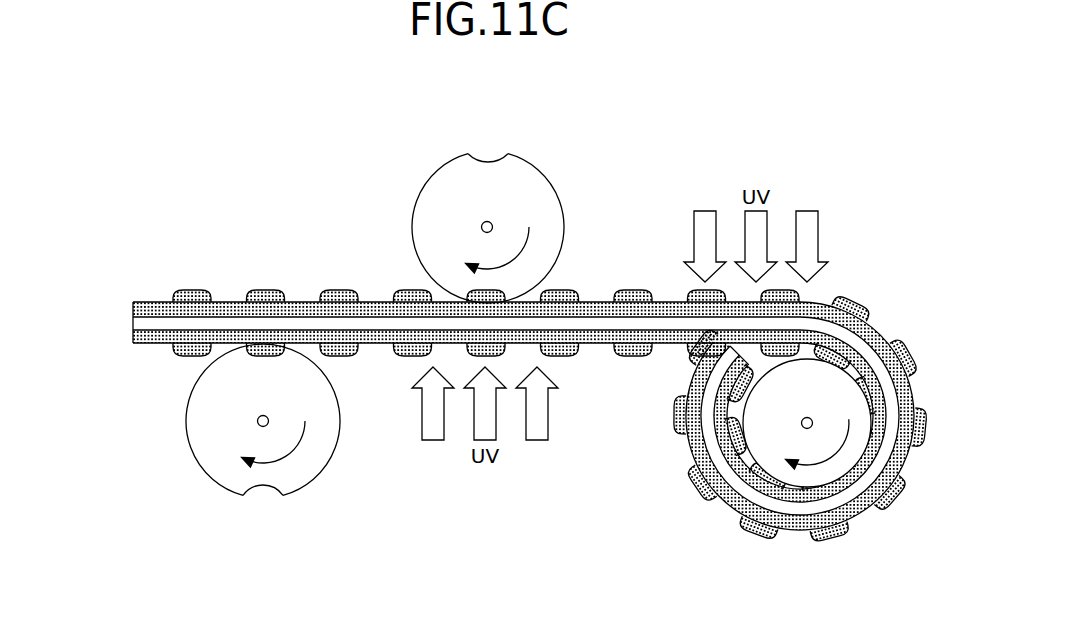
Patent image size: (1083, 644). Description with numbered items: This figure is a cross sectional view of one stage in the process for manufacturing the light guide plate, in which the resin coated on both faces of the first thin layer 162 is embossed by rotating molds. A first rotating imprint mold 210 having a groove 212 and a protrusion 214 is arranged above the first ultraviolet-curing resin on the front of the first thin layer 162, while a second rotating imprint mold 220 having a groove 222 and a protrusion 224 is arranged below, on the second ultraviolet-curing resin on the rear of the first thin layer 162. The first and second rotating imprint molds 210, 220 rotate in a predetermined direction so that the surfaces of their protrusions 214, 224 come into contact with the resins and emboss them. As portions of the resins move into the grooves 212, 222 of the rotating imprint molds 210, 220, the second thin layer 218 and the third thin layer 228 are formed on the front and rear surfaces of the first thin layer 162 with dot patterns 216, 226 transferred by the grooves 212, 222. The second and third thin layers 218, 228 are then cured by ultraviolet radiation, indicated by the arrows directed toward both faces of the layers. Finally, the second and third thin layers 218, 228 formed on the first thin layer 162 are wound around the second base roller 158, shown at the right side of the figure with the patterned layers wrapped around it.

The second base roller 158 is at (744, 416).
The first thin layer 162 is at (493, 381).
The first rotating imprint mold 210 is at (532, 192).
The groove 212 is at (487, 158).
The protrusion 214 is at (563, 227).
The dot pattern 216 is at (340, 292).
The second thin layer 218 is at (230, 308).
The second rotating imprint mold 220 is at (295, 459).
The groove 222 is at (263, 494).
The protrusion 224 is at (325, 465).
The dot pattern 226 is at (338, 348).
The third thin layer 228 is at (153, 344).